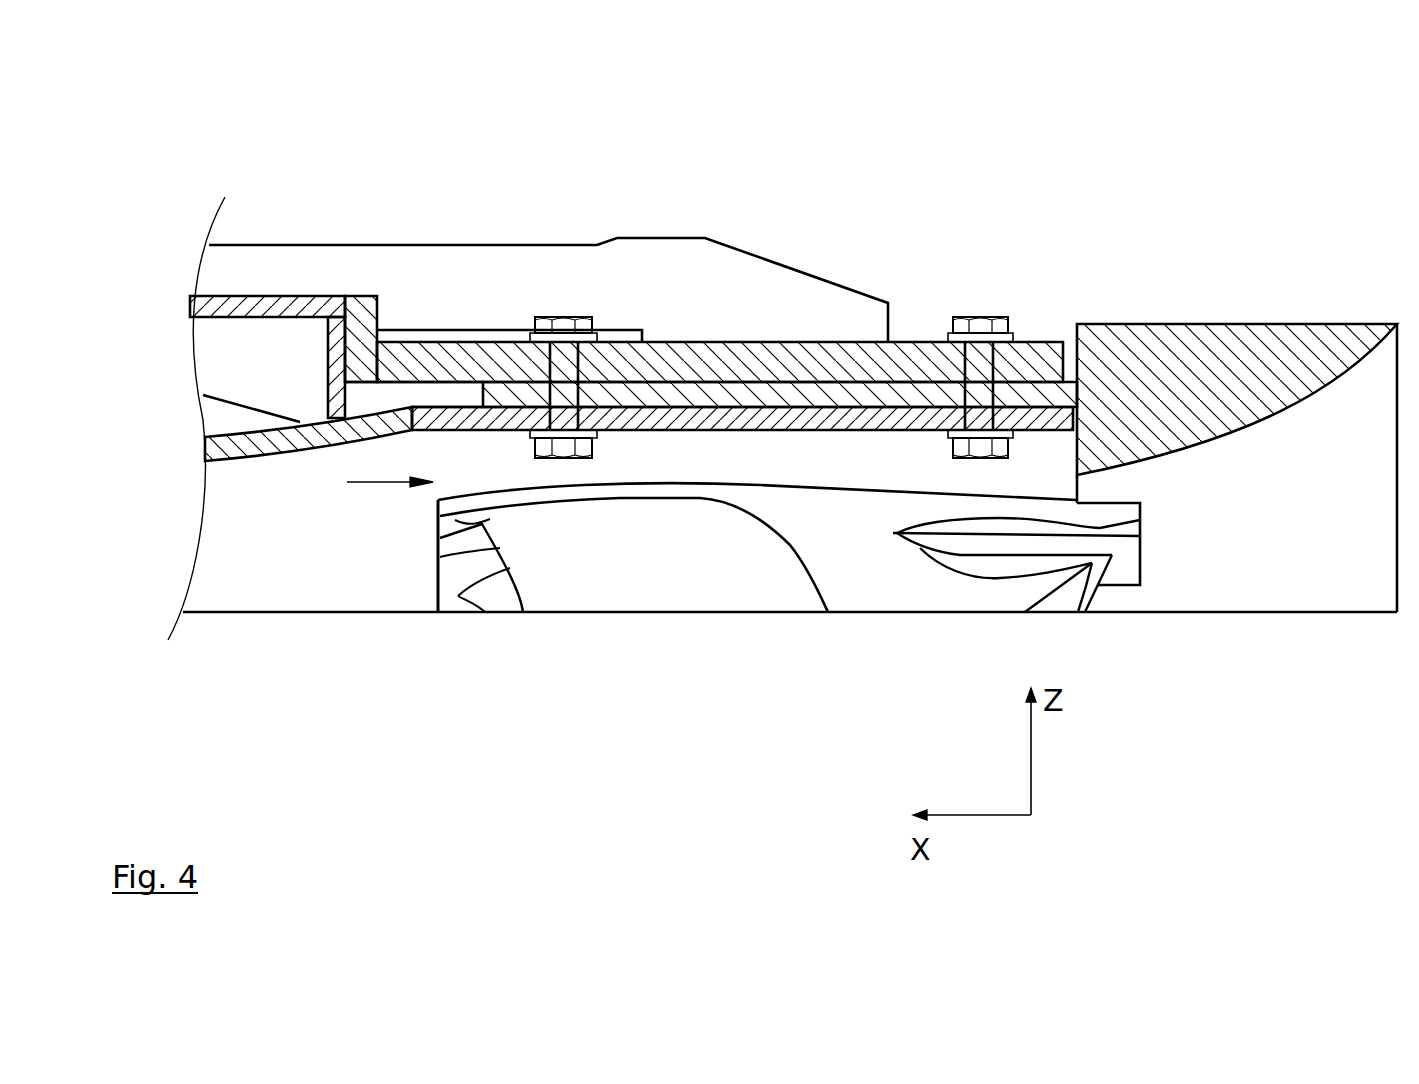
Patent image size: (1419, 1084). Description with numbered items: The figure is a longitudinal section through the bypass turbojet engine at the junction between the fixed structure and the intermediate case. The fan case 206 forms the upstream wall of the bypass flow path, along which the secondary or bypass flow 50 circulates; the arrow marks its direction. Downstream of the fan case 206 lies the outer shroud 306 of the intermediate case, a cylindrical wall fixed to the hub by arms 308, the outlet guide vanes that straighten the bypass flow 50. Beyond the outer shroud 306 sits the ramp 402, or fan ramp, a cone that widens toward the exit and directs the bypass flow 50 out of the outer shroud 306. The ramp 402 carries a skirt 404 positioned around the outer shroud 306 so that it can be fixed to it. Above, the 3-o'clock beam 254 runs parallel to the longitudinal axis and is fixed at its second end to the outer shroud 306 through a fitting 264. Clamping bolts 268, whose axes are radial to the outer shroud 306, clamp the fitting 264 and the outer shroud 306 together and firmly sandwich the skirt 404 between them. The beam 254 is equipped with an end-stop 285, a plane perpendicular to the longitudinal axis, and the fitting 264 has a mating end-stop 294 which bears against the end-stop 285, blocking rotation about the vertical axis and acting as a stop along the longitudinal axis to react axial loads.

The secondary or bypass flow 50 is at (390, 502).
The fan case 206 is at (320, 433).
The 3-o'clock beam 254 is at (665, 268).
The fitting 264 is at (807, 357).
The clamping bolts 268 is at (980, 325).
The end-stop 285 is at (332, 340).
The mating end-stop 294 is at (378, 297).
The outer shroud 306 is at (762, 417).
The arms 308 is at (593, 567).
The ramp 402 is at (1232, 390).
The skirt 404 is at (1027, 393).